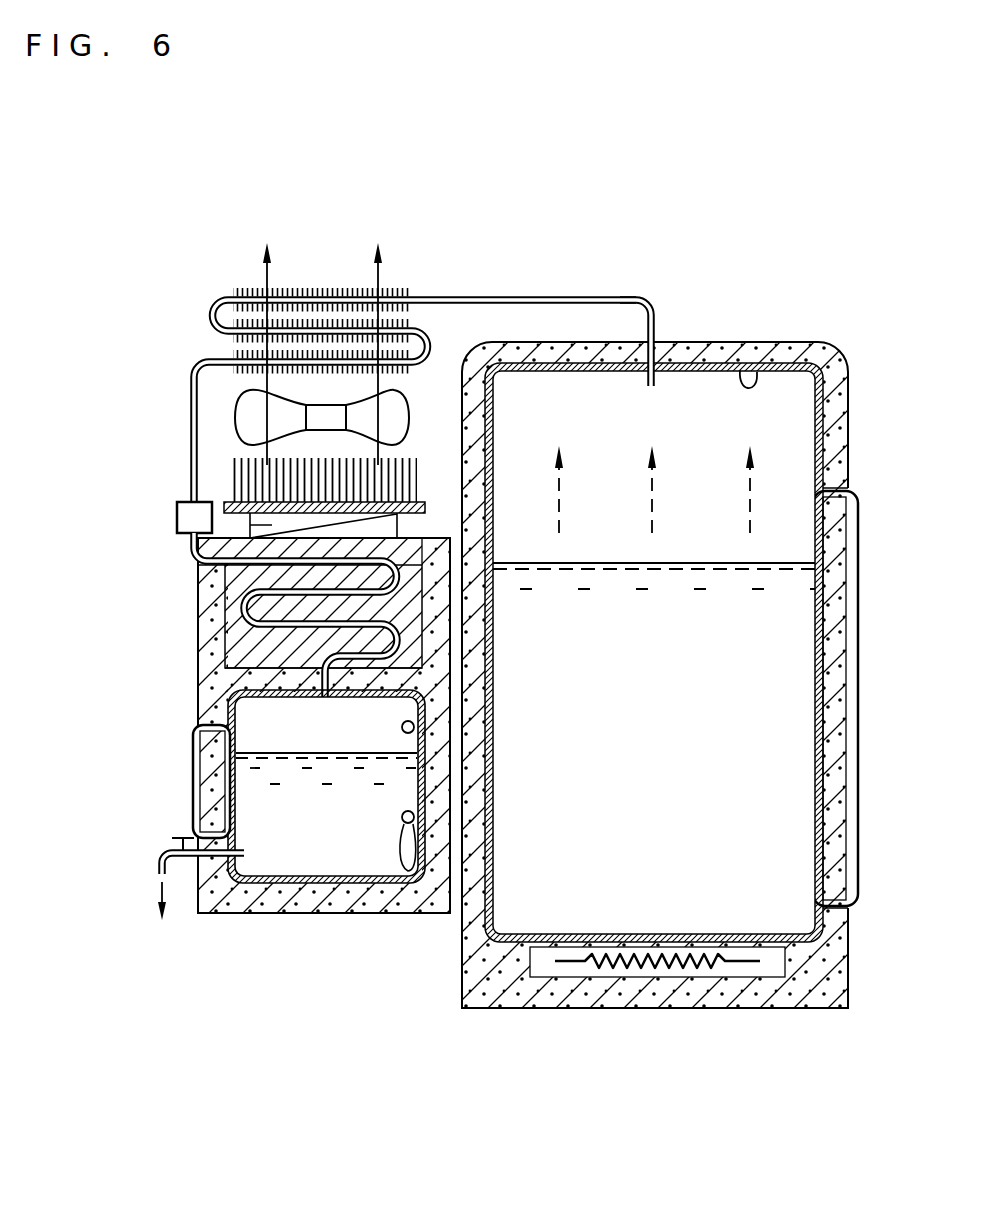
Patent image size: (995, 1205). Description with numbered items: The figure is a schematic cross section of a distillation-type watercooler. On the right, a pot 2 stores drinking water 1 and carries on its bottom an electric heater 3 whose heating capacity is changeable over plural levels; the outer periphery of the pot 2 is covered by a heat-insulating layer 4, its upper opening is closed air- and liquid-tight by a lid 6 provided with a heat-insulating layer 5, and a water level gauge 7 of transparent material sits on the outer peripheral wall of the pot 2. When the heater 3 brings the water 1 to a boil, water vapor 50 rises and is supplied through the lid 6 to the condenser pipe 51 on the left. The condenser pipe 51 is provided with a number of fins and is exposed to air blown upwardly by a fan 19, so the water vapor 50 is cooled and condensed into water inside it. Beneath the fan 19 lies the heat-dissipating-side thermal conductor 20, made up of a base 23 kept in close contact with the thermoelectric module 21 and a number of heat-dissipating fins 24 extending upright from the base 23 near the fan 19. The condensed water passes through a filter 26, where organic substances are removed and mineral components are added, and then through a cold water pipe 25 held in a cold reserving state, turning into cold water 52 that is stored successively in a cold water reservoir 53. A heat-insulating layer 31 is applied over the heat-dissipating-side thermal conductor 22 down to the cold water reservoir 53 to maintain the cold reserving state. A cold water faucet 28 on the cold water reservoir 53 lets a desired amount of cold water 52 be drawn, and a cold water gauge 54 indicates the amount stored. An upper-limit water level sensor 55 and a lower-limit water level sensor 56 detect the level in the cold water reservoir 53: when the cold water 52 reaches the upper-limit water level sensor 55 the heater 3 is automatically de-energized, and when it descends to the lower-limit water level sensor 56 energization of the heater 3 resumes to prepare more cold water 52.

The drinking water 1 is at (638, 763).
The pot 2 is at (822, 740).
The electric heater 3 is at (640, 970).
The heat-insulating layer 4 is at (838, 792).
The heat-insulating layer 5 is at (689, 341).
The lid 6 is at (757, 374).
The water level gauge 7 is at (859, 660).
The fan 19 is at (245, 412).
The heat-dissipating-side thermal conductor 20 is at (231, 465).
The thermoelectric module 21 is at (270, 526).
The heat-dissipating-side thermal conductor 22 is at (232, 602).
The base 23 is at (228, 507).
The heat-dissipating fins 24 is at (246, 462).
The cold water pipe 25 is at (246, 627).
The filter 26 is at (183, 515).
The cold water faucet 28 is at (160, 851).
The heat-insulating layer 31 is at (378, 914).
The water vapor 50 is at (654, 518).
The condenser pipe 51 is at (312, 297).
The cold water 52 is at (284, 846).
The cold water reservoir 53 is at (290, 885).
The cold water gauge 54 is at (194, 779).
The upper-limit water level sensor 55 is at (402, 727).
The lower-limit water level sensor 56 is at (412, 880).